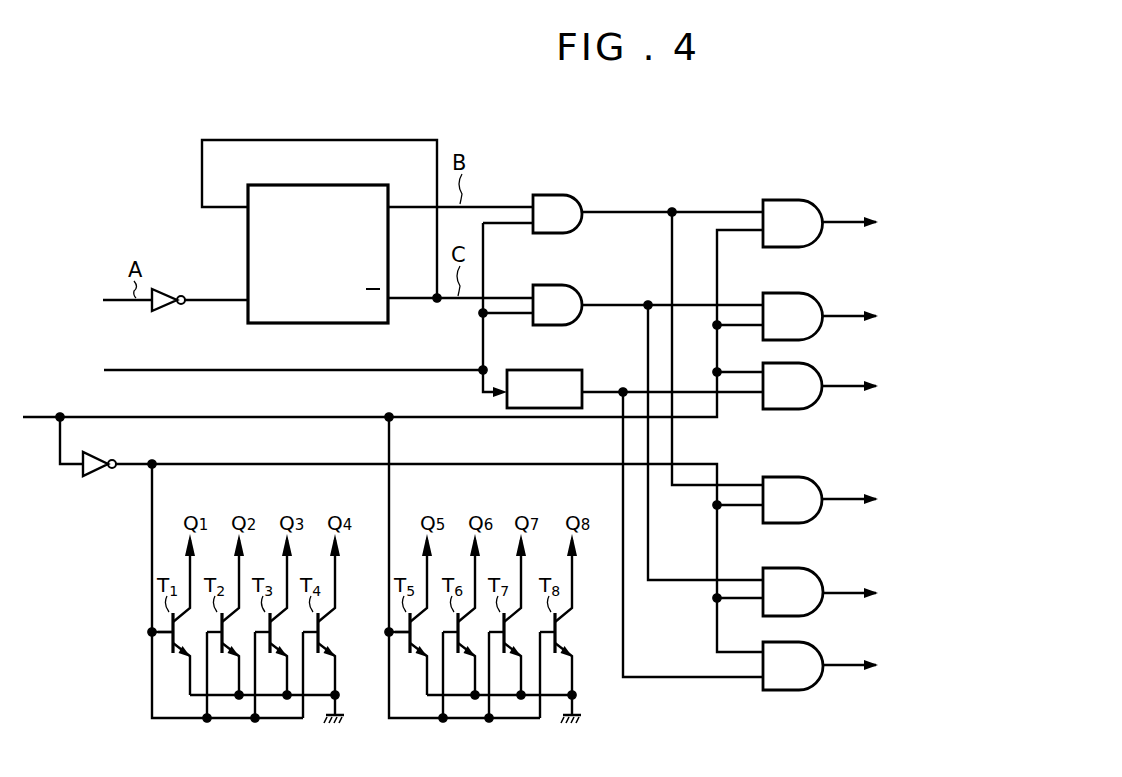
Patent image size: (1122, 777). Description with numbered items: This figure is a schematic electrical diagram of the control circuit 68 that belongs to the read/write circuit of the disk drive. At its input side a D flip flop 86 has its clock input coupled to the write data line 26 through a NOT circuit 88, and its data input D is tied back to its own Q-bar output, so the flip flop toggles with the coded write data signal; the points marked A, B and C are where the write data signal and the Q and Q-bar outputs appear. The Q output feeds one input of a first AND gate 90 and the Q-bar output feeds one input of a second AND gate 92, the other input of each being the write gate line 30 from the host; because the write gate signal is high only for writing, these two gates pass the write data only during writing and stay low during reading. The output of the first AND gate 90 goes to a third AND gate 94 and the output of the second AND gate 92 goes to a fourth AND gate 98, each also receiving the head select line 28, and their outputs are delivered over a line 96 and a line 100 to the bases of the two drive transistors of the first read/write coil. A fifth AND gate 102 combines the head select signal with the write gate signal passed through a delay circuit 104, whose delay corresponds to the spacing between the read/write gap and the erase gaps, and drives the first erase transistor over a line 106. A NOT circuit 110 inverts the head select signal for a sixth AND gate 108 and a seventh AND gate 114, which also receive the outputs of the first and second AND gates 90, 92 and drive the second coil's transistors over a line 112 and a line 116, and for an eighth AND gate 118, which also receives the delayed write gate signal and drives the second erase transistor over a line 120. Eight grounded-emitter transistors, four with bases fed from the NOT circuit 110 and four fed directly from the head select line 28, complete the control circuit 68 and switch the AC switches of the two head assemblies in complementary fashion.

The write data input line 26 is at (108, 298).
The NOT circuit 88 is at (175, 294).
The D flip flop 86 is at (322, 185).
The first AND gate 90 is at (553, 194).
The second AND gate 92 is at (537, 326).
The delay circuit 104 is at (570, 370).
The write gate line 30 is at (104, 370).
The head select line 28 is at (36, 418).
The NOT circuit 110 is at (112, 463).
The control circuit 68 is at (728, 158).
The third AND gate 94 is at (778, 200).
The line 96 is at (843, 218).
The fourth AND gate 98 is at (782, 293).
The line 100 is at (837, 313).
The fifth AND gate 102 is at (814, 386).
The line 106 is at (835, 388).
The sixth AND gate 108 is at (785, 471).
The line 112 is at (837, 494).
The seventh AND gate 114 is at (787, 567).
The line 116 is at (848, 590).
The eighth AND gate 118 is at (819, 650).
The line 120 is at (845, 668).